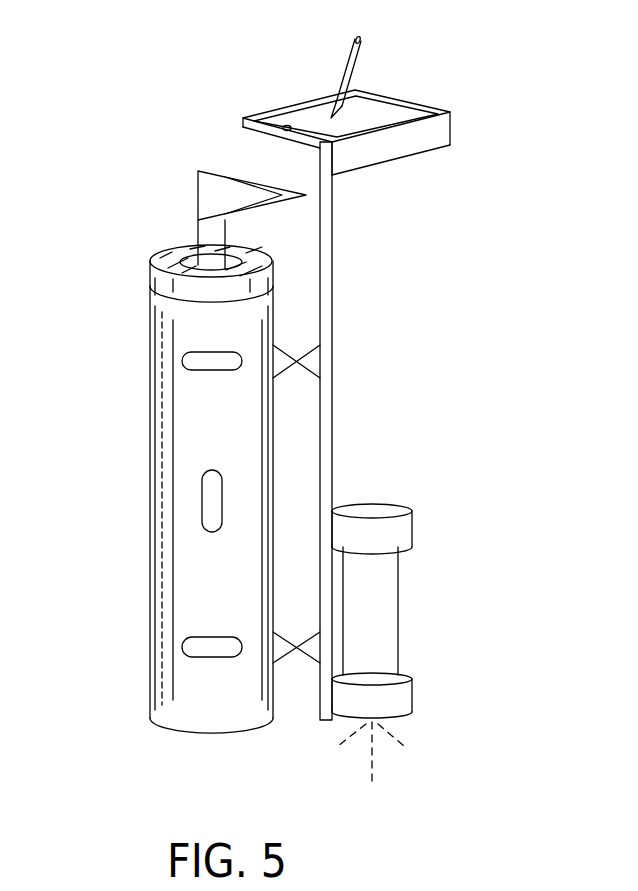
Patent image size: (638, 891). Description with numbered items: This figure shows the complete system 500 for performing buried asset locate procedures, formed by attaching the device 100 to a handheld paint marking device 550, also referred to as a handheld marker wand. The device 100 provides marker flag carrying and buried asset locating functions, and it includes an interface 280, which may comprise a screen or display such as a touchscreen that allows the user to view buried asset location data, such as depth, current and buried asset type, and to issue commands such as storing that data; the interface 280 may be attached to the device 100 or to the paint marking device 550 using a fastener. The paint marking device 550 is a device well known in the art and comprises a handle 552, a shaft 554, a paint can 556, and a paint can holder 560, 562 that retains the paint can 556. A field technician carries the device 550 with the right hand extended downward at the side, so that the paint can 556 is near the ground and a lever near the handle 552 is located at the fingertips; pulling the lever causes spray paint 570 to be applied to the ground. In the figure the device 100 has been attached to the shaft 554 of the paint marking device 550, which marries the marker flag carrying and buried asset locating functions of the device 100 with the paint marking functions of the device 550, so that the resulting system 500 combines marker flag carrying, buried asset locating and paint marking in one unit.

The device 100 is at (141, 178).
The interface 280 is at (437, 110).
The system 500 is at (214, 128).
The handheld paint marking device 550 is at (281, 64).
The handle 552 is at (453, 131).
The shaft 554 is at (332, 311).
The paint can 556 is at (398, 605).
The paint can holder 560 is at (412, 530).
The paint can holder 562 is at (412, 696).
The paint 570 is at (398, 741).